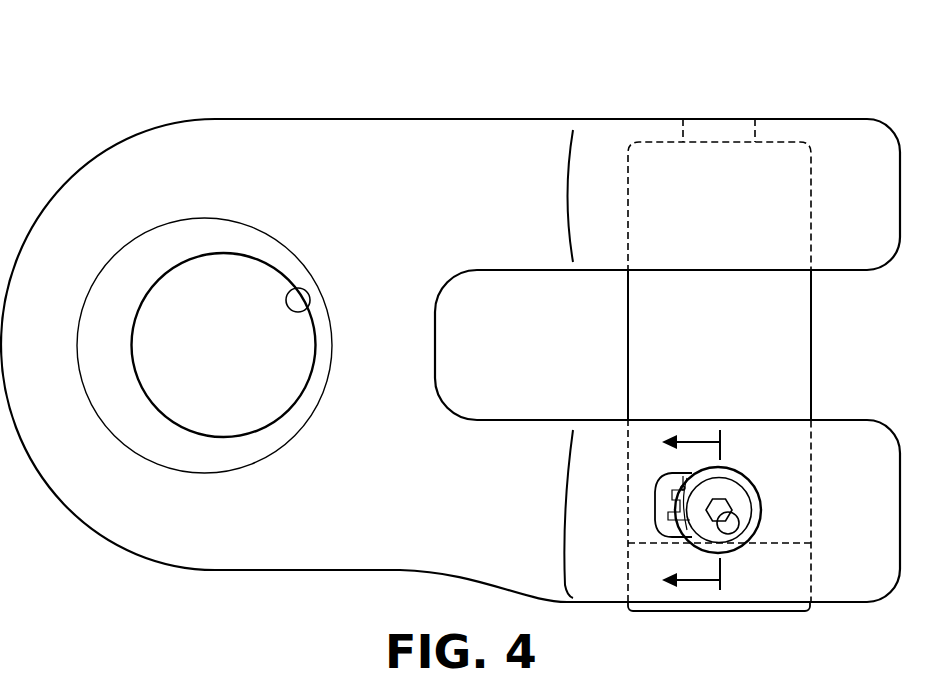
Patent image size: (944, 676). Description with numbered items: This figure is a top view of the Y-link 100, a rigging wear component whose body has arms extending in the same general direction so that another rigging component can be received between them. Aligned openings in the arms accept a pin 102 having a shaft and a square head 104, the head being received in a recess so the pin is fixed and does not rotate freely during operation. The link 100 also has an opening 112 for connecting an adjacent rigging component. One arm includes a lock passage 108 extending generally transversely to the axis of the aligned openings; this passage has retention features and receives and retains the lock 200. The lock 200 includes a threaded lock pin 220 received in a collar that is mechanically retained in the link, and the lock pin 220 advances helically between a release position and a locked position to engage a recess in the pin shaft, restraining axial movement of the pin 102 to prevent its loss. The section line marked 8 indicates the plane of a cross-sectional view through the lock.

The Y-link 100 is at (268, 92).
The pin 102 is at (812, 348).
The head 104 is at (770, 611).
The lock passage 108 is at (656, 487).
The opening 112 is at (306, 312).
The lock 200 is at (752, 462).
The lock pin 220 is at (746, 508).
The section line 8- 8 is at (704, 512).